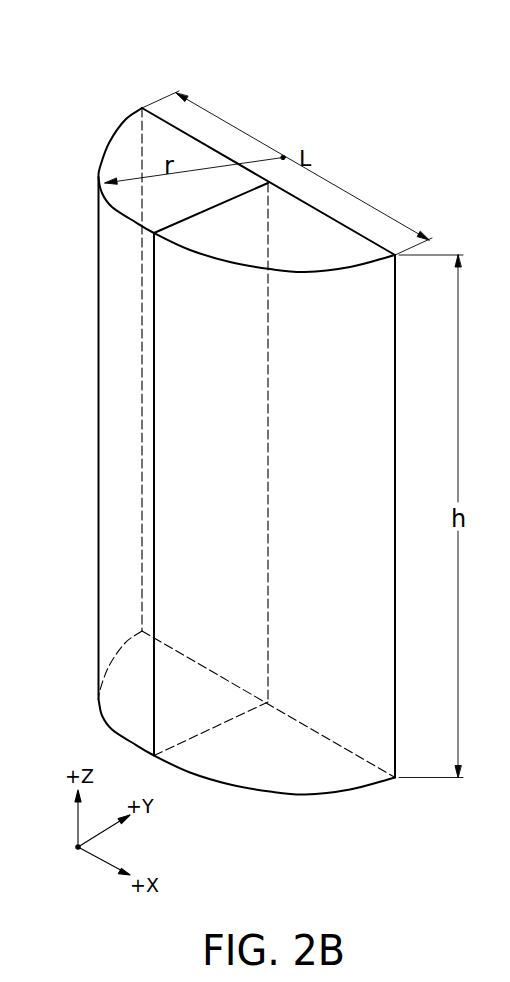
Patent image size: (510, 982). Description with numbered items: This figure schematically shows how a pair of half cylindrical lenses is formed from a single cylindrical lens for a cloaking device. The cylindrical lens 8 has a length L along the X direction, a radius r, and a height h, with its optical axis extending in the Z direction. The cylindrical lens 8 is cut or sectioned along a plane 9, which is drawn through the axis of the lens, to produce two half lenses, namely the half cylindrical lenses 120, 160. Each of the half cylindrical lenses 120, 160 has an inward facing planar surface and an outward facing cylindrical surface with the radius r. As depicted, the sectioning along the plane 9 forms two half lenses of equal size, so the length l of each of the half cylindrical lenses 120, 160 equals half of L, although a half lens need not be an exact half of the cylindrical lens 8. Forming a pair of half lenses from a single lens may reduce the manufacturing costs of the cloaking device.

The cylindrical lens 8 is at (222, 409).
The half cylindrical lens 120 is at (246, 146).
The half cylindrical lens 160 is at (281, 436).
The plane 9 is at (187, 722).